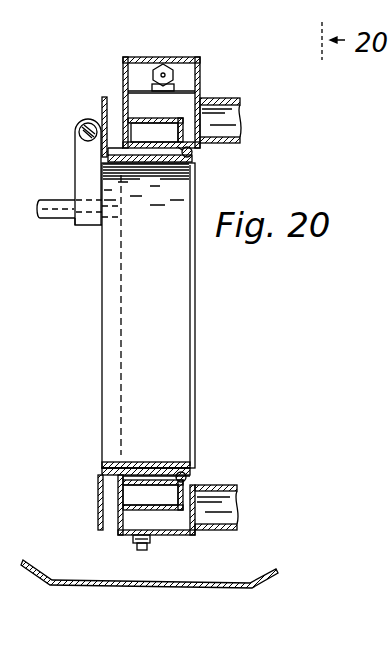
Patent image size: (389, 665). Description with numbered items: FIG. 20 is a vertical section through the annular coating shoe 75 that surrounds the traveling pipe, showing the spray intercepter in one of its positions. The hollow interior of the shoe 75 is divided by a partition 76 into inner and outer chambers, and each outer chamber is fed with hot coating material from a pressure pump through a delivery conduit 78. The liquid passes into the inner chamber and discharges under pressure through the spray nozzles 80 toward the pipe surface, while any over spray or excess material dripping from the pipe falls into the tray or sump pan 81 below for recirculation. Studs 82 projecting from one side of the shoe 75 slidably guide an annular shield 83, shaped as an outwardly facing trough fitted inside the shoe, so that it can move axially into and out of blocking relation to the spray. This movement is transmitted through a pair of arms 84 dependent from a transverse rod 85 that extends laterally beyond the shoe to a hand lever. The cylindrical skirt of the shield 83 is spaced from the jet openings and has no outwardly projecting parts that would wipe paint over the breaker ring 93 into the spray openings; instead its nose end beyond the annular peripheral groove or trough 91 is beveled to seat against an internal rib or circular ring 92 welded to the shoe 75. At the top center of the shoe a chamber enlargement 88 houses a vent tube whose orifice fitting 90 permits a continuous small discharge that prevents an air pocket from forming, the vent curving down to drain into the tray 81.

The annular coating shoe 75 is at (197, 353).
The partition 76 is at (172, 130).
The delivery conduit 78 is at (241, 112).
The spray nozzles 80 is at (167, 472).
The tray or sump pan 81 is at (228, 588).
The studs 82 is at (53, 198).
The annular shield 83 is at (118, 339).
The arms 84 is at (83, 153).
The transverse rod 85 is at (82, 123).
The chamber enlargement 88 is at (136, 57).
The orifice fitting 90 is at (164, 65).
The annular peripheral groove or trough 91 is at (154, 138).
The internal rib or circular ring 92 is at (194, 155).
The breaker ring 93 is at (186, 176).